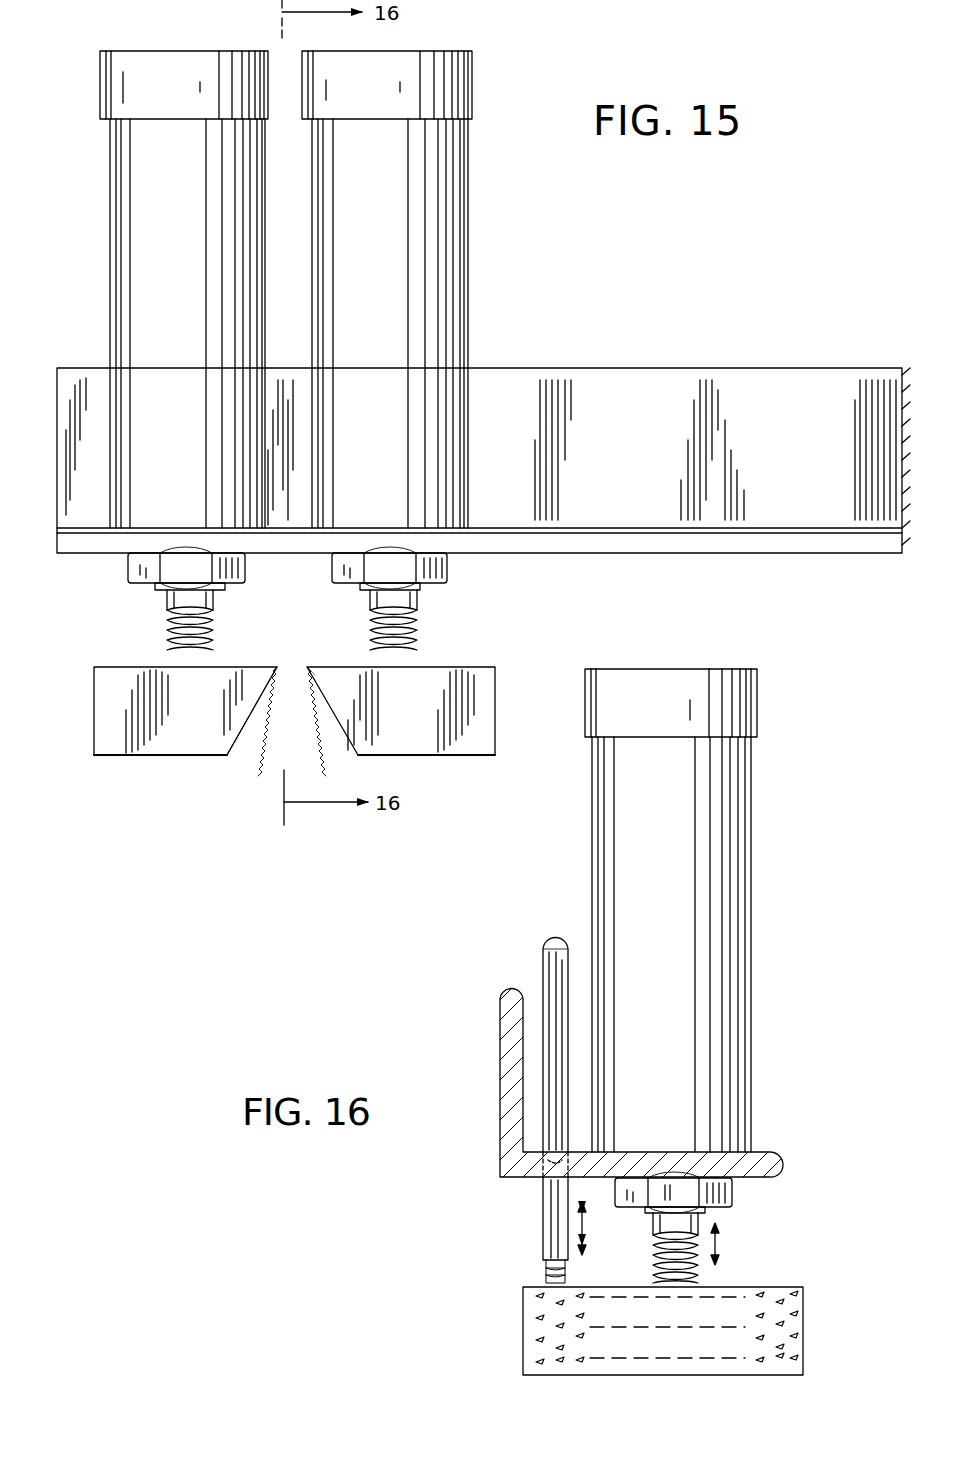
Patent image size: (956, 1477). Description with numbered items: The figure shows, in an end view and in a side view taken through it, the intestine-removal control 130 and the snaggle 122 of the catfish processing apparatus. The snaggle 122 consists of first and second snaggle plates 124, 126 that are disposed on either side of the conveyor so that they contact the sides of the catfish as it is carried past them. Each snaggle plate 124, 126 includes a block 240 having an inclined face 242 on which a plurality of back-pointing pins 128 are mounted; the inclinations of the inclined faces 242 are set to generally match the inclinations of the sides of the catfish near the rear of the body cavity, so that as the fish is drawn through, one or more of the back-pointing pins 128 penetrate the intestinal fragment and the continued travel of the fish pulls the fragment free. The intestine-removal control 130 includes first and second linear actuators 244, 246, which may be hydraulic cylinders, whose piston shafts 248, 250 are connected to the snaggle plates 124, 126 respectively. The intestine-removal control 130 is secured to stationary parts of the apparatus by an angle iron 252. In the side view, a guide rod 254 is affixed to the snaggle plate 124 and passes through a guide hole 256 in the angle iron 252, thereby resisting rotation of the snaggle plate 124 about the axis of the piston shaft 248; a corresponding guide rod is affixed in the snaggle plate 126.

In FIG. 15, the snaggle 122 is at (518, 658).
In FIG. 15, the first snaggle plate 124 is at (485, 700).
In FIG. 16, the first snaggle plate 124 is at (523, 1297).
In FIG. 15, the second snaggle plate 126 is at (110, 695).
In FIG. 15, the back-pointing pins 128 is at (314, 685).
In FIG. 16, the back-pointing pins 128 is at (540, 1338).
In FIG. 15, the intestine-removal control 130 is at (551, 293).
In FIG. 16, the intestine-removal control 130 is at (770, 790).
In FIG. 15, the block 240 is at (110, 755).
In FIG. 15, the inclined face 242 is at (228, 756).
In FIG. 15, the first linear actuator 244 is at (463, 258).
In FIG. 16, the first linear actuator 244 is at (738, 880).
In FIG. 15, the second linear actuator 246 is at (117, 263).
In FIG. 15, the piston shaft 248 is at (417, 624).
In FIG. 16, the piston shaft 248 is at (698, 1268).
In FIG. 15, the piston shaft 250 is at (167, 620).
In FIG. 15, the angle iron 252 is at (727, 542).
In FIG. 16, the angle iron 252 is at (505, 1070).
In FIG. 16, the guide rod 254 is at (525, 950).
In FIG. 16, the guide hole 256 is at (552, 1182).